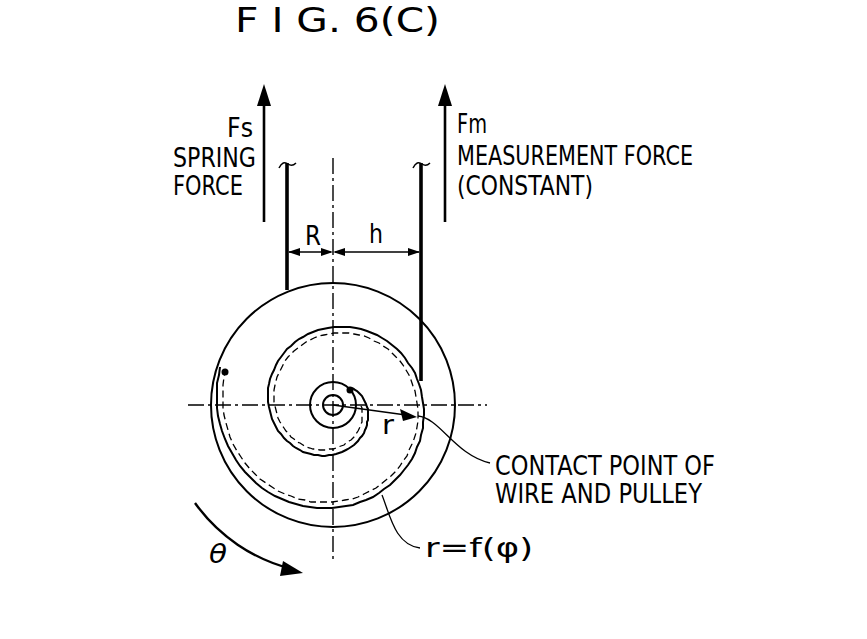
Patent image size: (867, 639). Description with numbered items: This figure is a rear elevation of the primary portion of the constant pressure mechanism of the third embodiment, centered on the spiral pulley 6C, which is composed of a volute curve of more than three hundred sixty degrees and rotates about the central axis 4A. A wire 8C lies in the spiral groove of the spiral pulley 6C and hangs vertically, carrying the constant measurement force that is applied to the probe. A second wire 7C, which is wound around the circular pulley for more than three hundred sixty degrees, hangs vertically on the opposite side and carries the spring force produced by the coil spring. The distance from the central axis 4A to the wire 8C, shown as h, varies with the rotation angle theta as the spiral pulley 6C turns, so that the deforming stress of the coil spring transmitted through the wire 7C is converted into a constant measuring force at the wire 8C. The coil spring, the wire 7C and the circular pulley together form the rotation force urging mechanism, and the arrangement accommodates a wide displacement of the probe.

The central axis 4A is at (348, 391).
The spiral pulley 6C is at (262, 443).
The wire 7C is at (286, 232).
The wire 8C is at (423, 277).